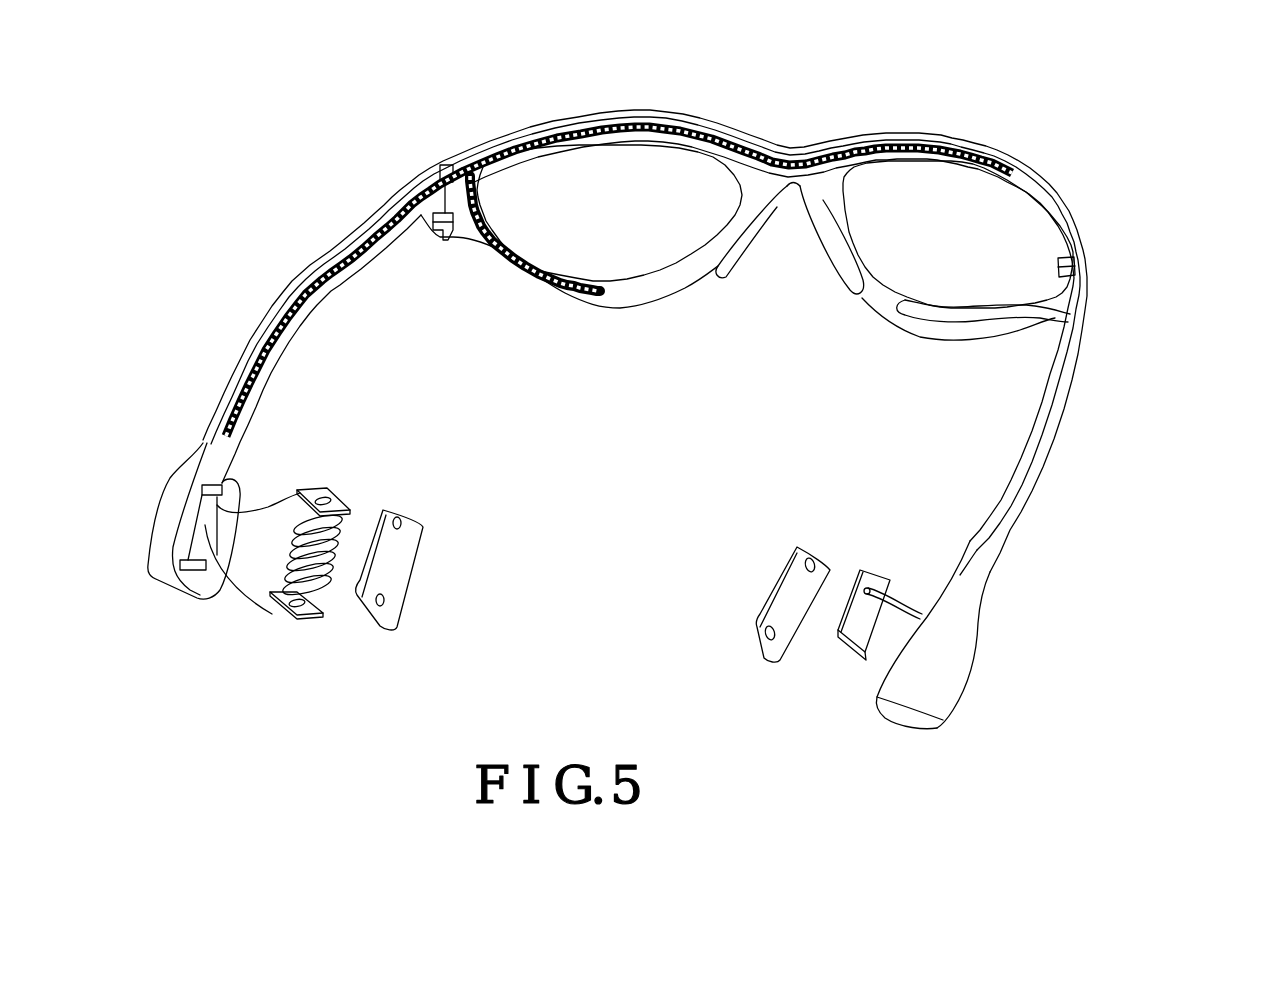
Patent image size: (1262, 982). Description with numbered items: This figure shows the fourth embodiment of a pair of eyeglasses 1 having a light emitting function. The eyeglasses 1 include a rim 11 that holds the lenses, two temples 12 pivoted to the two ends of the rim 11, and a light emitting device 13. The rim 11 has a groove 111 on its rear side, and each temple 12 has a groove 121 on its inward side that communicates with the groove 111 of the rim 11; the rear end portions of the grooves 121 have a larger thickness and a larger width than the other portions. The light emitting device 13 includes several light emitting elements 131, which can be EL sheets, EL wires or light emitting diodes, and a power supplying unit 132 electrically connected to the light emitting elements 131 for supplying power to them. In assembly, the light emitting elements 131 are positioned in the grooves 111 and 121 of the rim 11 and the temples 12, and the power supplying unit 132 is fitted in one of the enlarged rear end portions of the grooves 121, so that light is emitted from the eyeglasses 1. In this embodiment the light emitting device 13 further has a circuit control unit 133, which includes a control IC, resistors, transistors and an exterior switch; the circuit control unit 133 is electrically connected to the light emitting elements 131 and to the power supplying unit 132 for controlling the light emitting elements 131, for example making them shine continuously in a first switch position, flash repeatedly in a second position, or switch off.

The eyeglasses 1 is at (1011, 164).
The rim 11 is at (858, 305).
The groove 111 is at (890, 168).
The temple 12 is at (243, 322).
The groove 121 is at (358, 265).
The light emitting device 13 is at (363, 511).
The light emitting element 131 is at (952, 138).
The power supplying unit 132 is at (350, 492).
The circuit control unit 133 is at (838, 628).